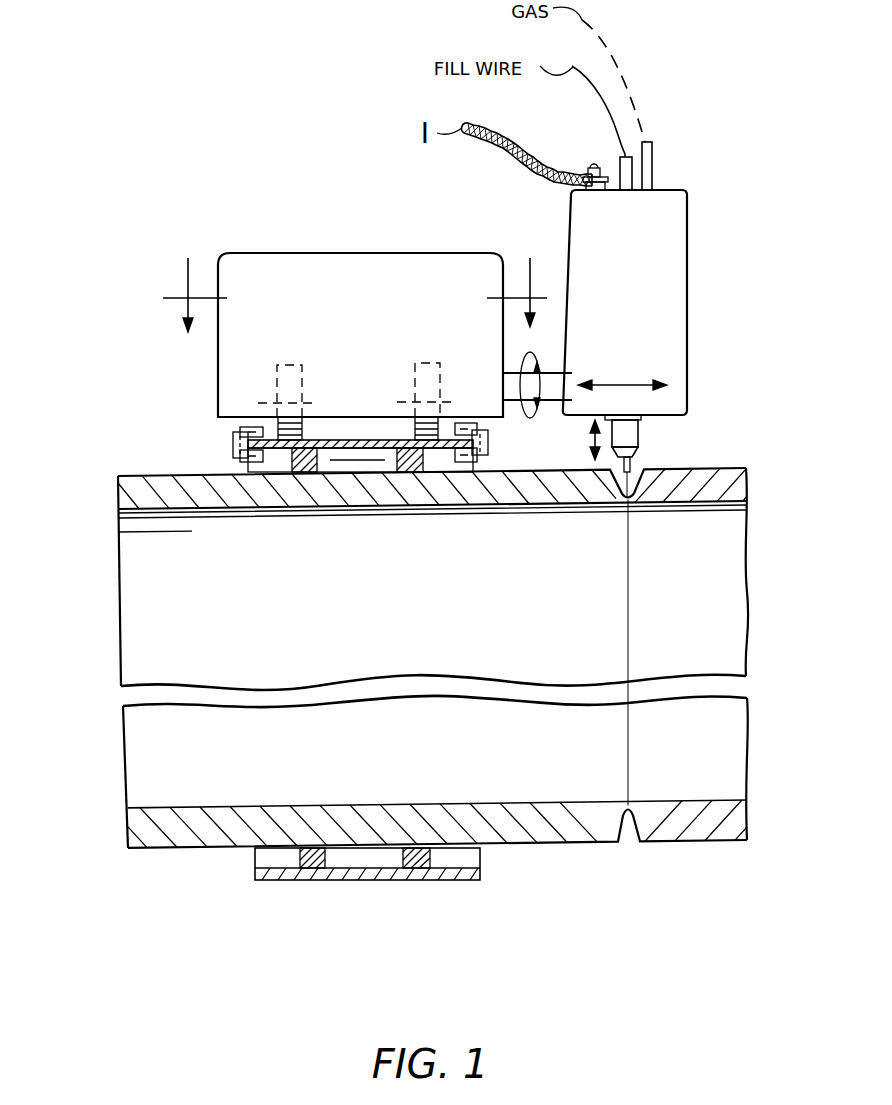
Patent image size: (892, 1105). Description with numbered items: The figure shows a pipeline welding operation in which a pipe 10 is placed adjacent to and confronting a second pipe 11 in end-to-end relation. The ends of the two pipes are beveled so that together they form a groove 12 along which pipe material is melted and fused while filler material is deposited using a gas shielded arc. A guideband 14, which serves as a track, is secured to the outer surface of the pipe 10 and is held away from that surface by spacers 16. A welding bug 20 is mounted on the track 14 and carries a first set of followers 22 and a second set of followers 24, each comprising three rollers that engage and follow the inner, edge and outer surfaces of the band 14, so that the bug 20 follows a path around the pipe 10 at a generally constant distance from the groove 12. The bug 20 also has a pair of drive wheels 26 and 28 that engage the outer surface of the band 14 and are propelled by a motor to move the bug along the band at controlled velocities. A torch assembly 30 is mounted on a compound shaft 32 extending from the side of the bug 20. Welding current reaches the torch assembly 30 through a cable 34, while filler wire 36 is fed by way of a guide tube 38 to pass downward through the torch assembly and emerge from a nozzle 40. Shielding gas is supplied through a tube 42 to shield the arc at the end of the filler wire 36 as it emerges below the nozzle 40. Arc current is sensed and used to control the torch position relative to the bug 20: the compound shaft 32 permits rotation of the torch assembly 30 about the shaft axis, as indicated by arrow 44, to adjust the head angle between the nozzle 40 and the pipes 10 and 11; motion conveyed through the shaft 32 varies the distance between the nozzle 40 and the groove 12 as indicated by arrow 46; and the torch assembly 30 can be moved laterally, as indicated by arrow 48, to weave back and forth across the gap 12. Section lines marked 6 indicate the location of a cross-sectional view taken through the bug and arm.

The section line 6- 6 is at (355, 279).
The pipe 10 is at (132, 597).
The second pipe 11 is at (736, 578).
The groove 12 is at (634, 828).
The guideband 14 is at (357, 441).
The spacers 16 is at (305, 877).
The welding bug 20 is at (378, 293).
The first set of followers 22 is at (234, 441).
The second set of followers 24 is at (490, 428).
The drive wheel 26 is at (405, 375).
The drive wheel 28 is at (308, 372).
The torch assembly 30 is at (645, 288).
The compound shaft 32 is at (557, 383).
The cable 34 is at (520, 167).
The filler wire 36 is at (604, 117).
The guide tube 38 is at (620, 163).
The nozzle 40 is at (628, 433).
The tube 42 is at (636, 92).
The arrow 44 is at (524, 414).
The arrow 46 is at (592, 442).
The arrow 48 is at (626, 382).